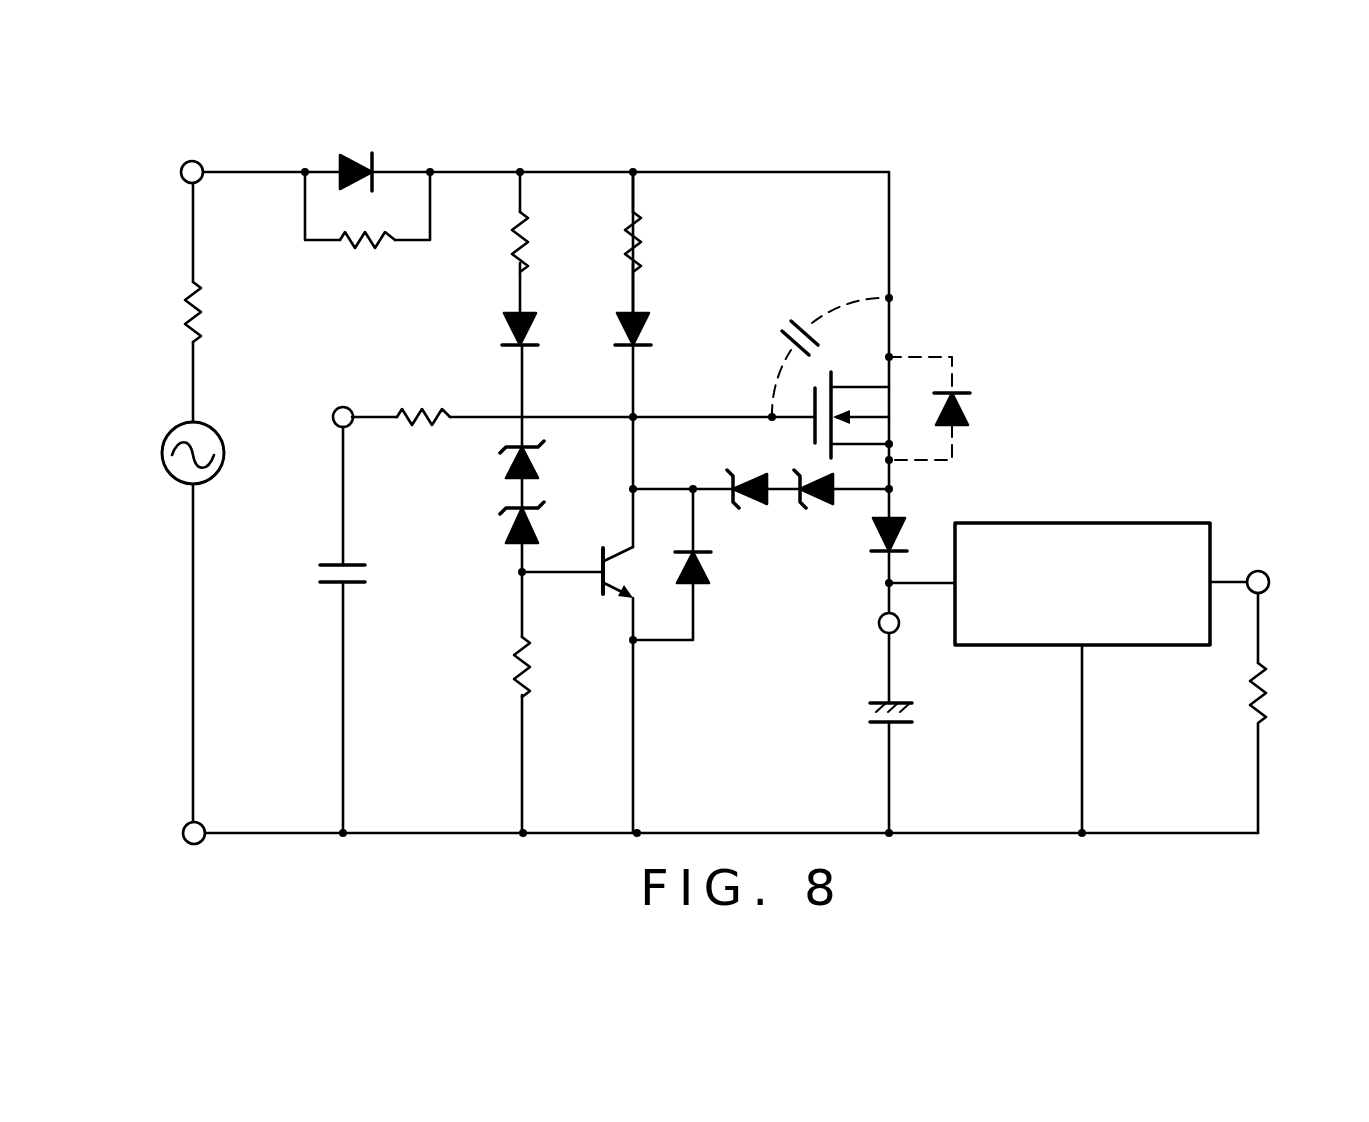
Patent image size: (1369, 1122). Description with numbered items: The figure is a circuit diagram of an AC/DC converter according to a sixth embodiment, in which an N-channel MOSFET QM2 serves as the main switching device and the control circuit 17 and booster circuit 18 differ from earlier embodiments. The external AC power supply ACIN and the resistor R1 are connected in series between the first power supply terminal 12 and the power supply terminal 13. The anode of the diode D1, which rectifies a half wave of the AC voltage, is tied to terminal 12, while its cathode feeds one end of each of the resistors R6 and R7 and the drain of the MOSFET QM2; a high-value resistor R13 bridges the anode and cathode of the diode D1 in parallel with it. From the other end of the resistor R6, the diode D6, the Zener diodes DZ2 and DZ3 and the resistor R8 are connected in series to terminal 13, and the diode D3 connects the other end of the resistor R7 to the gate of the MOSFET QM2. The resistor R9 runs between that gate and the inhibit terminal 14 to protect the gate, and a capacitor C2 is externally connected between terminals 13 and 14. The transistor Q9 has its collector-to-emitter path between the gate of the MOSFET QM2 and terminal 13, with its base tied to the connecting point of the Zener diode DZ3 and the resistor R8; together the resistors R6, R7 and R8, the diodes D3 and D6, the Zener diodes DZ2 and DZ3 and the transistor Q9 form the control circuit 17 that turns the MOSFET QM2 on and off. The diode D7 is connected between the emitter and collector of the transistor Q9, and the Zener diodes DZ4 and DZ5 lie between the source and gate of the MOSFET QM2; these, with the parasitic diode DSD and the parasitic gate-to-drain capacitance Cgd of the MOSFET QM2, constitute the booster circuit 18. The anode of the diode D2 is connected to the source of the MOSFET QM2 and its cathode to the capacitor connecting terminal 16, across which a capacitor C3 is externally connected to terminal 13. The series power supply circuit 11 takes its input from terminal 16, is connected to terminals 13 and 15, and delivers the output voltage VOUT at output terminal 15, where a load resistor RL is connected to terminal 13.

The series power supply circuit 11 is at (1160, 522).
The first power supply terminal 12 is at (195, 160).
The power supply terminal 13 is at (203, 842).
The inhibit terminal 14 is at (340, 406).
The output terminal 15 is at (1258, 570).
The capacitor connecting terminal 16 is at (878, 624).
The control circuit 17 is at (565, 148).
The booster circuit 18 is at (720, 352).
The resistor R1 is at (185, 310).
The AC power supply ACIN is at (166, 445).
The diode D1 is at (358, 156).
The resistor of high resistance R13 is at (366, 248).
The resistor R6 is at (533, 240).
The resistor R7 is at (627, 245).
The diode D6 is at (504, 322).
The diode D3 is at (620, 312).
The parasitic capacitance Cgd is at (784, 330).
The parasitic diode DSD is at (960, 390).
The N-channel MOSFET QM2 is at (900, 437).
The resistor R9 is at (426, 406).
The Zener diode DZ2 is at (505, 464).
The Zener diode DZ3 is at (505, 526).
The resistor R8 is at (540, 657).
The transistor Q9 is at (600, 586).
The diode D7 is at (704, 584).
The Zener diode DZ4 is at (748, 504).
The Zener diode DZ5 is at (820, 506).
The diode D2 is at (908, 536).
The capacitor C3 is at (918, 714).
The capacitor C2 is at (318, 578).
The output voltage VOUT is at (1308, 574).
The load resistor RL is at (1278, 700).